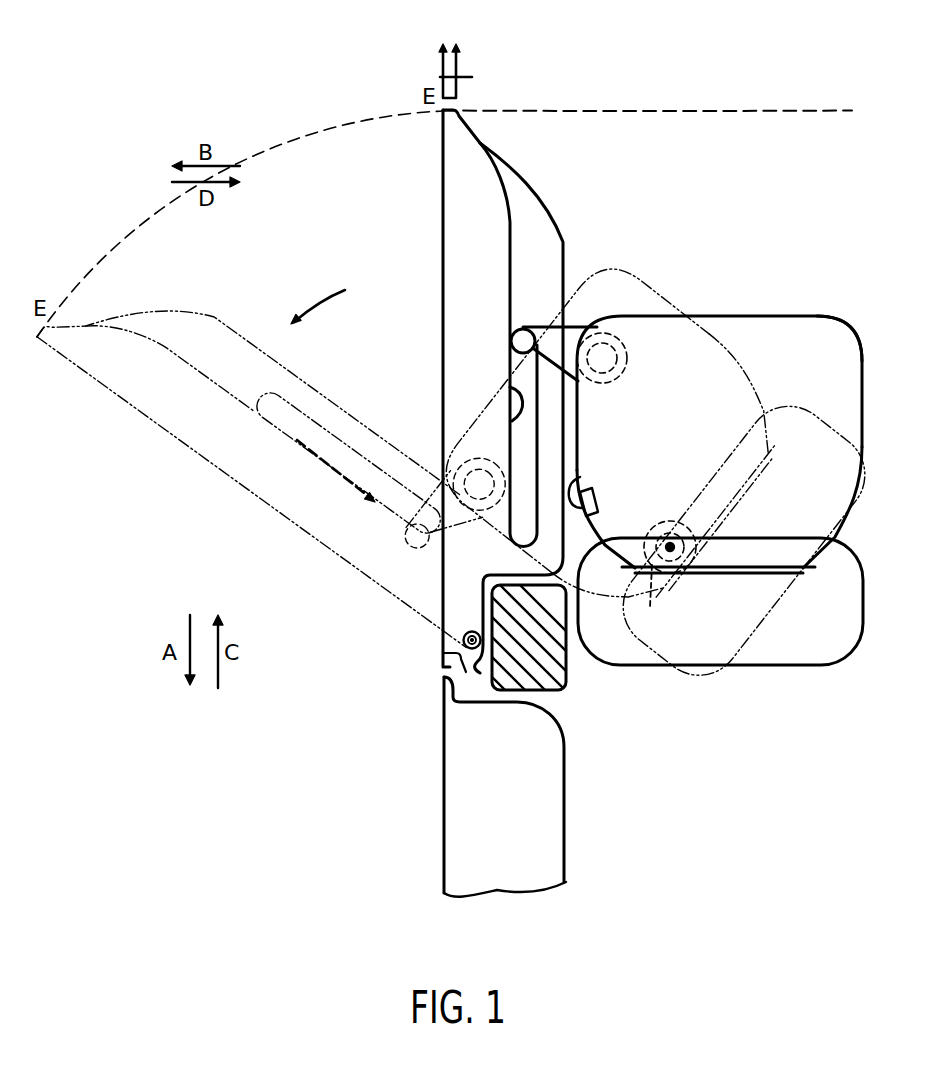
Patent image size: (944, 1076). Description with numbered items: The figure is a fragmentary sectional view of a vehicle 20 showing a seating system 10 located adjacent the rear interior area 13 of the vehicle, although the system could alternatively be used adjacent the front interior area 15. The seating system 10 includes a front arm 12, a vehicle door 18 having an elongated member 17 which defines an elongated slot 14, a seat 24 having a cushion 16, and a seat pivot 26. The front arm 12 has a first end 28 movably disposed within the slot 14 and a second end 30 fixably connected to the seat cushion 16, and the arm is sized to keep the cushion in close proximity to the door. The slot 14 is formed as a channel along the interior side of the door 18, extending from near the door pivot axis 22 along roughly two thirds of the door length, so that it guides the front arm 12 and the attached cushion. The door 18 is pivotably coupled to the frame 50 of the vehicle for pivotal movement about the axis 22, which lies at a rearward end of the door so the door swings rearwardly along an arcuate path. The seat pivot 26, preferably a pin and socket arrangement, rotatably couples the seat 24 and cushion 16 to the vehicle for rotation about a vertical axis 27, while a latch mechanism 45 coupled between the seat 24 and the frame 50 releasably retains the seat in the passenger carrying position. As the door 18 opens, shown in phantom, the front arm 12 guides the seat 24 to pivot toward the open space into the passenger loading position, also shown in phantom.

The seating system 10 is at (739, 302).
The front arm 12 is at (575, 340).
The rear interior area 13 is at (649, 268).
The elongated slot 14 is at (510, 388).
The front interior area 15 is at (442, 77).
The seat cushion 16 is at (808, 333).
The elongated member 17 is at (547, 229).
The vehicle door 18 is at (452, 224).
The vehicle 20 is at (301, 127).
The door pivot axis 22 is at (463, 641).
The seat 24 is at (851, 330).
The seat pivot 26 is at (660, 603).
The axis 27 is at (669, 544).
The first end 28 is at (522, 330).
The second end 30 is at (636, 339).
The latch mechanism 45 is at (577, 485).
The frame 50 is at (562, 688).